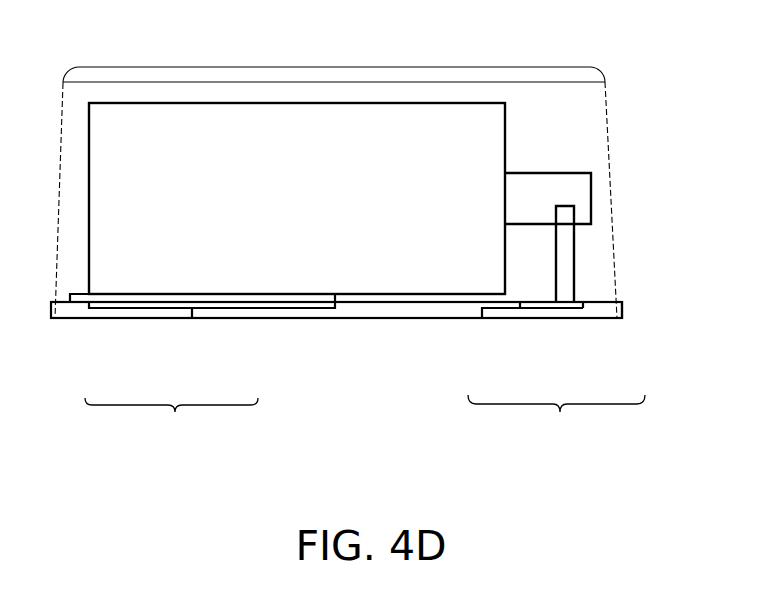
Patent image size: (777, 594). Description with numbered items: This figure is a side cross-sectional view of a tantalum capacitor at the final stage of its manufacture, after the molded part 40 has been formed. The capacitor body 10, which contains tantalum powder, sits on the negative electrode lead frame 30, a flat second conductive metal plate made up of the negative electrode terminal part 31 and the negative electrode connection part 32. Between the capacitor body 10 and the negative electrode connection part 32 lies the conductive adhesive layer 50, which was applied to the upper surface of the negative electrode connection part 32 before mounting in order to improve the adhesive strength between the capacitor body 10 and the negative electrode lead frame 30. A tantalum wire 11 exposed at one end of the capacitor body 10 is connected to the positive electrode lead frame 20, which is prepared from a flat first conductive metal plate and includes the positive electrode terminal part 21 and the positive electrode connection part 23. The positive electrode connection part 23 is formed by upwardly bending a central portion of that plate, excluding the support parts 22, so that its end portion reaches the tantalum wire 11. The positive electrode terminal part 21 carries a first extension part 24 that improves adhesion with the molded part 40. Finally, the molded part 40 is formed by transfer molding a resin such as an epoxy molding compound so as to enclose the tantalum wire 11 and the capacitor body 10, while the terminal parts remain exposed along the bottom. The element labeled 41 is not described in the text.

The capacitor body 10 is at (377, 270).
The tantalum wire 11 is at (575, 194).
The positive electrode lead frame 20 is at (556, 418).
The positive electrode terminal part 21 is at (500, 313).
The support part 22 is at (597, 312).
The positive electrode connection part 23 is at (563, 297).
The first extension part 24 is at (543, 313).
The negative electrode lead frame 30 is at (171, 420).
The negative electrode terminal part 31 is at (97, 312).
The negative electrode connection part 32 is at (255, 307).
The molded part 40 is at (608, 115).
The substrate / base 41 is at (423, 308).
The conductive adhesive layer 50 is at (303, 297).